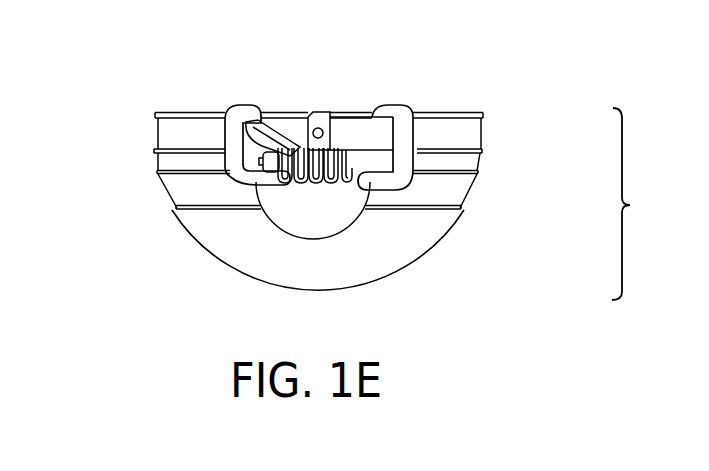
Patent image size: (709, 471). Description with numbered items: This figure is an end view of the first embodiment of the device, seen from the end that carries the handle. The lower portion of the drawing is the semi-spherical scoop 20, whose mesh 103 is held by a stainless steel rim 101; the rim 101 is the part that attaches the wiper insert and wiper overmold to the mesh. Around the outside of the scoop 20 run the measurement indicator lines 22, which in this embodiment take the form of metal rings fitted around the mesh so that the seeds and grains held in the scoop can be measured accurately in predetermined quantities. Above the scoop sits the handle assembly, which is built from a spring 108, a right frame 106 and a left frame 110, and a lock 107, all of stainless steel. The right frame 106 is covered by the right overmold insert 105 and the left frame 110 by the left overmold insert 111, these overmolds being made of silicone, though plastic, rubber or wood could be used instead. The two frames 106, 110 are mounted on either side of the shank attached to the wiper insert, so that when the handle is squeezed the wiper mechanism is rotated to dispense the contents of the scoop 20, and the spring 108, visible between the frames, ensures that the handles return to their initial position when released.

The scoop 20 is at (643, 204).
The measurement indicator lines 22 is at (177, 209).
The rim 101 is at (157, 131).
The mesh 103 is at (228, 265).
The right overmold insert 105 is at (456, 120).
The right frame 106 is at (407, 133).
The lock 107 is at (343, 137).
The spring 108 is at (322, 190).
The left frame 110 is at (151, 110).
The left overmold insert 111 is at (228, 133).